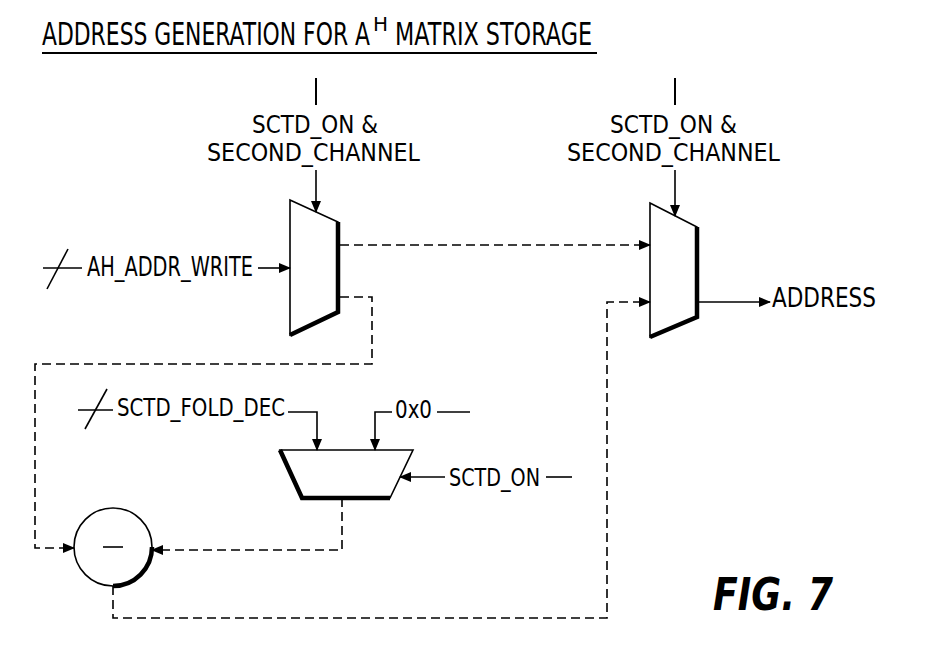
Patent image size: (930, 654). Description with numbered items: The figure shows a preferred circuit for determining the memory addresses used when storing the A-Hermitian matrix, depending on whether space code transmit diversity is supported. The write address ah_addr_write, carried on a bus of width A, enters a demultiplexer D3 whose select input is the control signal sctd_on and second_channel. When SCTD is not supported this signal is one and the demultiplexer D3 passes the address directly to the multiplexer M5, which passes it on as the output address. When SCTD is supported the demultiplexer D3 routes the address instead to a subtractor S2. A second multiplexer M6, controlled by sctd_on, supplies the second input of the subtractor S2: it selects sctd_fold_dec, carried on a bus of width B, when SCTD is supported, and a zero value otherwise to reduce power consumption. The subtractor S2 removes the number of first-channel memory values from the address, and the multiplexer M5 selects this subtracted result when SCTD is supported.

The demultiplexer D3 is at (331, 267).
The multiplexer M5 is at (691, 270).
The second multiplexer M6 is at (346, 493).
The subtractor S2 is at (113, 529).
The AH_ADDR_WRITE bus width A is at (54, 276).
The SCTD_FOLD_DEC bus width B is at (88, 415).